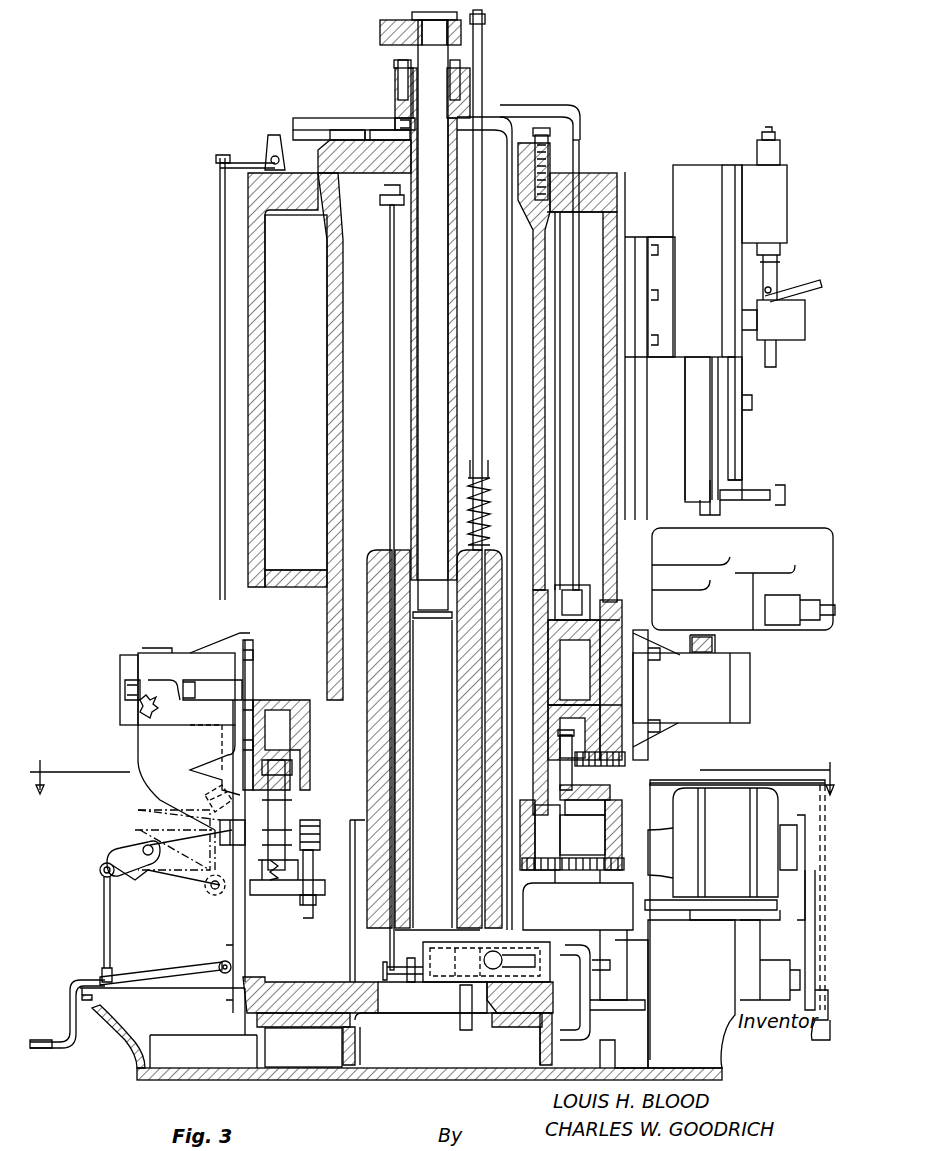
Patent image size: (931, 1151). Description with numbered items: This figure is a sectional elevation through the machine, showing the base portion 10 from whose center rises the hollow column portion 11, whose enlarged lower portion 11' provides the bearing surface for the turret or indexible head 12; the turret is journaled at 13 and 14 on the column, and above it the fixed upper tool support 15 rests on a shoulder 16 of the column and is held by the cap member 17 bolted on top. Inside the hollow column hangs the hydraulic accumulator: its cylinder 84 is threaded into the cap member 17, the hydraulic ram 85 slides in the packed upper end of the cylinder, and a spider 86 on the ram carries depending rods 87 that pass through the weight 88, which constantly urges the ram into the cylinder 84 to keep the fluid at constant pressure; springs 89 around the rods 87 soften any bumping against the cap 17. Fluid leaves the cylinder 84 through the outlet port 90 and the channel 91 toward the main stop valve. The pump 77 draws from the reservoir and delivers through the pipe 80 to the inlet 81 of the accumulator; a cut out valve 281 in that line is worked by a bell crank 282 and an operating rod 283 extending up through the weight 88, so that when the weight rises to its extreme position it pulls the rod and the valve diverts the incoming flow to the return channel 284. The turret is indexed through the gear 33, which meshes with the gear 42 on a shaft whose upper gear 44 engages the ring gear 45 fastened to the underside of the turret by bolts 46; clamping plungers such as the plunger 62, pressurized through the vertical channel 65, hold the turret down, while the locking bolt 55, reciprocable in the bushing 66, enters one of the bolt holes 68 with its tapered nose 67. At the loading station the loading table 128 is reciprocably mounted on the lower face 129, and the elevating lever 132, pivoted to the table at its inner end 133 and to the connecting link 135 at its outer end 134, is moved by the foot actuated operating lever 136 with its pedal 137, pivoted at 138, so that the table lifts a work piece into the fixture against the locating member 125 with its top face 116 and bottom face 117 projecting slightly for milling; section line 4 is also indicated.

The spider 86 is at (380, 32).
The depending rods 87 is at (482, 75).
The inlet of the accumulator 81 is at (490, 105).
The cap member 17 is at (525, 140).
The outlet port 90 is at (398, 105).
The channel 91 is at (345, 117).
The column portion 11 is at (416, 415).
The hydraulic ram 85 is at (427, 293).
The cylinder 84 is at (412, 365).
The springs 89 is at (470, 470).
The vertical channel 65 is at (575, 525).
The weight 88 is at (368, 720).
The fixed head or upper tool support 15 is at (600, 580).
The clamping plunger 62 is at (575, 605).
The turret or indexible head 12 is at (640, 660).
The shoulder 16 is at (535, 620).
The journal 14 is at (552, 660).
The journal 13 is at (555, 705).
The bolts 46 is at (565, 735).
The bolt holes 68 is at (290, 730).
The tapered nose 67 is at (295, 768).
The bushing 66 is at (290, 815).
The locking bolt 55 is at (314, 848).
The gear 44 is at (600, 780).
The enlarged lower portion of the column 11' is at (725, 906).
The ring gear 45 is at (569, 835).
The gear 33 is at (574, 919).
The gear 42 is at (625, 862).
The pump 77 is at (710, 969).
The pipe 80 is at (575, 995).
The operating rod 283 is at (392, 950).
The bell crank 282 is at (385, 975).
The cut out valve 281 is at (440, 985).
The return channel 284 is at (462, 1030).
The base portion 10 is at (118, 1025).
The top face 116 is at (152, 653).
The locating member 125 is at (130, 660).
The bottom face 117 is at (140, 738).
The loading table 128 is at (145, 752).
The inner end of elevating lever 133 is at (212, 800).
The elevating lever 132 is at (120, 852).
The outer end of elevating lever 134 is at (100, 870).
The connecting link 135 is at (104, 938).
The foot actuated operating lever 136 is at (145, 975).
The lower face 129 is at (240, 938).
The pivot 138 is at (220, 965).
The pedal 137 is at (42, 1040).
The section line 4 is at (432, 779).